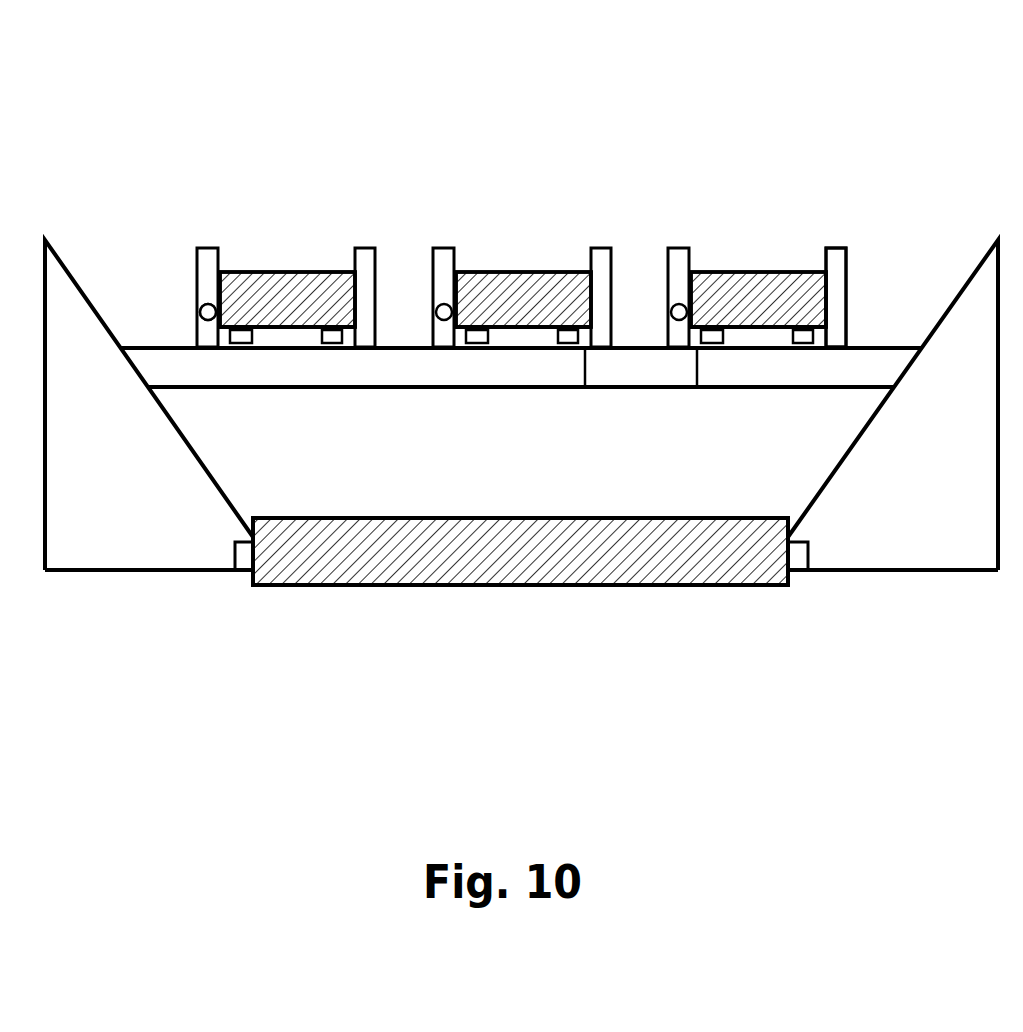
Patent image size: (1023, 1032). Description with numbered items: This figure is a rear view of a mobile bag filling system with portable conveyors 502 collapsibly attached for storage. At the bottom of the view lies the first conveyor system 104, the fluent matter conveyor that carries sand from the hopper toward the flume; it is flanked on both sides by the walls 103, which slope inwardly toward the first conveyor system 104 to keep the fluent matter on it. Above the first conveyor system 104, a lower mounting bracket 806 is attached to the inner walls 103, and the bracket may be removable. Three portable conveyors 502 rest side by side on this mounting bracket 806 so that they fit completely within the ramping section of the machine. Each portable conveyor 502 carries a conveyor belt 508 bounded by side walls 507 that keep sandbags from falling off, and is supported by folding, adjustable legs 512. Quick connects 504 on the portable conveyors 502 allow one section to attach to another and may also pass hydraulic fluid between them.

The walls 103 is at (120, 522).
The first conveyor system 104 is at (517, 588).
The portable conveyor 502 is at (223, 138).
The quick connects 504 is at (200, 312).
The walls 507 is at (850, 250).
The conveyor belt 508 is at (290, 272).
The legs 512 is at (697, 348).
The lower mounting bracket 806 is at (388, 370).